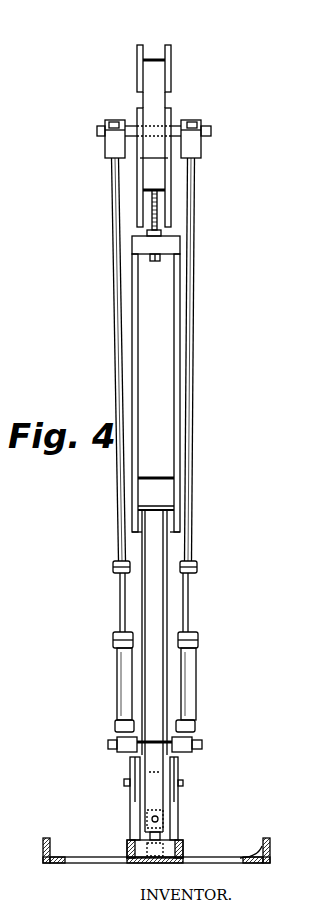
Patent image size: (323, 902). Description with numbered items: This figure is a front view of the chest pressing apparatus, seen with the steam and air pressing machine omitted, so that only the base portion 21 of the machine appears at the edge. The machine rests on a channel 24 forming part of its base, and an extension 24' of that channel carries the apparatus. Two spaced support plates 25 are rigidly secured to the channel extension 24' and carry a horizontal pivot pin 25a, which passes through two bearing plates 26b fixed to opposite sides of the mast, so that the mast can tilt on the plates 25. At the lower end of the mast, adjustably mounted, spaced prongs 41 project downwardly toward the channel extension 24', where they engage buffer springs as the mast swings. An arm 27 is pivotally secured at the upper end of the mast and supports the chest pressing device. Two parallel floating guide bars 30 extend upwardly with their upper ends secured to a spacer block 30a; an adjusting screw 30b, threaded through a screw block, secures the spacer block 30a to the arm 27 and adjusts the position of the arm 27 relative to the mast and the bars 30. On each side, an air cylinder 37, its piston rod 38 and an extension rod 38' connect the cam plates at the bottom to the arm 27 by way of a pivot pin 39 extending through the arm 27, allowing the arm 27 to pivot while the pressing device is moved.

The arm 27 is at (160, 107).
The pivot pin 39 is at (133, 121).
The adjusting screw 30b is at (152, 213).
The spacer block 30a is at (170, 246).
The floating guide bars 30 is at (137, 353).
The bearing plates 26b is at (163, 782).
The extension rod 38' is at (153, 359).
The piston rod 38 is at (153, 596).
The air cylinder 37 is at (117, 677).
The support plates 25 is at (130, 812).
The pivot pin 25a is at (124, 783).
The prongs 41 is at (160, 836).
The channel extension 24' is at (127, 866).
The channel 24 is at (156, 865).
The base portion 21 is at (11, 778).